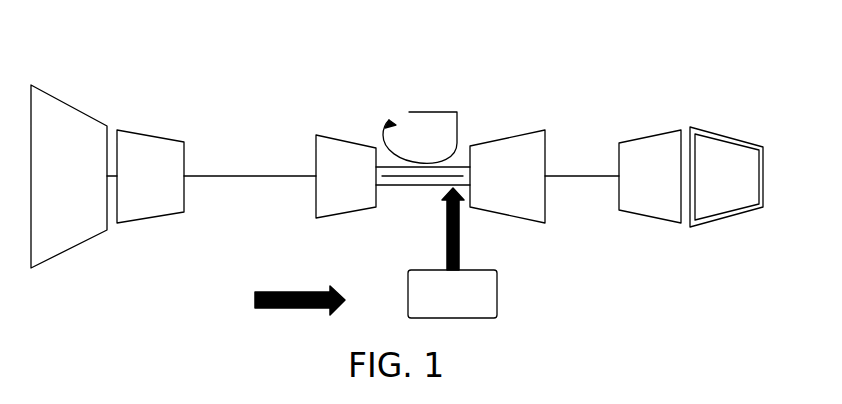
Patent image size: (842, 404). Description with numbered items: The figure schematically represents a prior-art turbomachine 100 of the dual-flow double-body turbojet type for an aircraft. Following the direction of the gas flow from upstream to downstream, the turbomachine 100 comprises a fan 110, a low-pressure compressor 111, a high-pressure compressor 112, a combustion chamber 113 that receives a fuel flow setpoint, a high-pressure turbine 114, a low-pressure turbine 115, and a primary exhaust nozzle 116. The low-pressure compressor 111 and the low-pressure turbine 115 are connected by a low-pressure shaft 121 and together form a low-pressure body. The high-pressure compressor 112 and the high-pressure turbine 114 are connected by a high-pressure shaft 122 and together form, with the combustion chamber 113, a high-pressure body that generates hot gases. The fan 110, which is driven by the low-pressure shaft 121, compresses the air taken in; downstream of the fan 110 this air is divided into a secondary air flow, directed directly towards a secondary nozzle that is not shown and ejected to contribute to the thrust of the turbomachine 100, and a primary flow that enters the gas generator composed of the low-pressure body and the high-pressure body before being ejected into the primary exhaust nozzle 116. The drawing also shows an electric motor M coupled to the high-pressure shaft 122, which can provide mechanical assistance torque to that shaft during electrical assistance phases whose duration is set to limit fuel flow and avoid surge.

The turbomachine 100 is at (246, 82).
The fan 110 is at (70, 102).
The low-pressure compressor 111 is at (148, 135).
The high-pressure compressor 112 is at (342, 140).
The combustion chamber 113 is at (430, 112).
The high-pressure turbine 114 is at (512, 138).
The low-pressure turbine 115 is at (653, 135).
The primary exhaust nozzle 116 is at (725, 138).
The low-pressure shaft 121 is at (258, 175).
The high-pressure shaft 122 is at (418, 187).